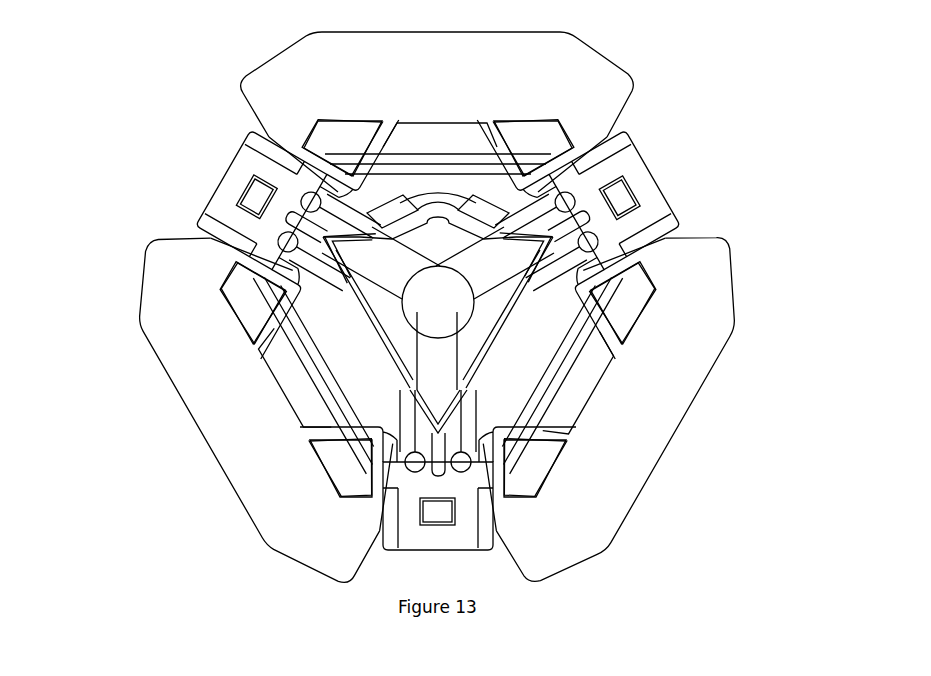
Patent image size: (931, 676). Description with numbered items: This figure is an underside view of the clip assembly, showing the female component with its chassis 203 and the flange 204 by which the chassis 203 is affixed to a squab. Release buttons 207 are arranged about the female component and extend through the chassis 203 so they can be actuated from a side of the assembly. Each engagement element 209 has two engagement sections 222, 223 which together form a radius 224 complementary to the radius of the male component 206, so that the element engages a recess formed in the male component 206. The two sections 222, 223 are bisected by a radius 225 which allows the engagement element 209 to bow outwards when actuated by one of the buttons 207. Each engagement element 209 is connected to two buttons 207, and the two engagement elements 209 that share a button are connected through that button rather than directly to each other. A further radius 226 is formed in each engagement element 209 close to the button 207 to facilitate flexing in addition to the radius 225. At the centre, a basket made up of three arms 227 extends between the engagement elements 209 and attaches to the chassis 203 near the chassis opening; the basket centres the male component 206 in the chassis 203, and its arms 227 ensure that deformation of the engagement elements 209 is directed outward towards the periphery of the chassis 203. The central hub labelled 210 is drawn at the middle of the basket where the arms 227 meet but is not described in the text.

The flange 204 is at (610, 95).
The release button 207 is at (448, 336).
The radius 225 is at (548, 277).
The engagement section 222 is at (528, 312).
The engagement element 209 is at (540, 282).
The chassis 203 is at (550, 338).
The male component 206 is at (470, 357).
The hub 210 is at (437, 306).
The arm 227 is at (372, 278).
The radius 226 is at (396, 315).
The radius 224 is at (508, 337).
The engagement section 223 is at (492, 377).